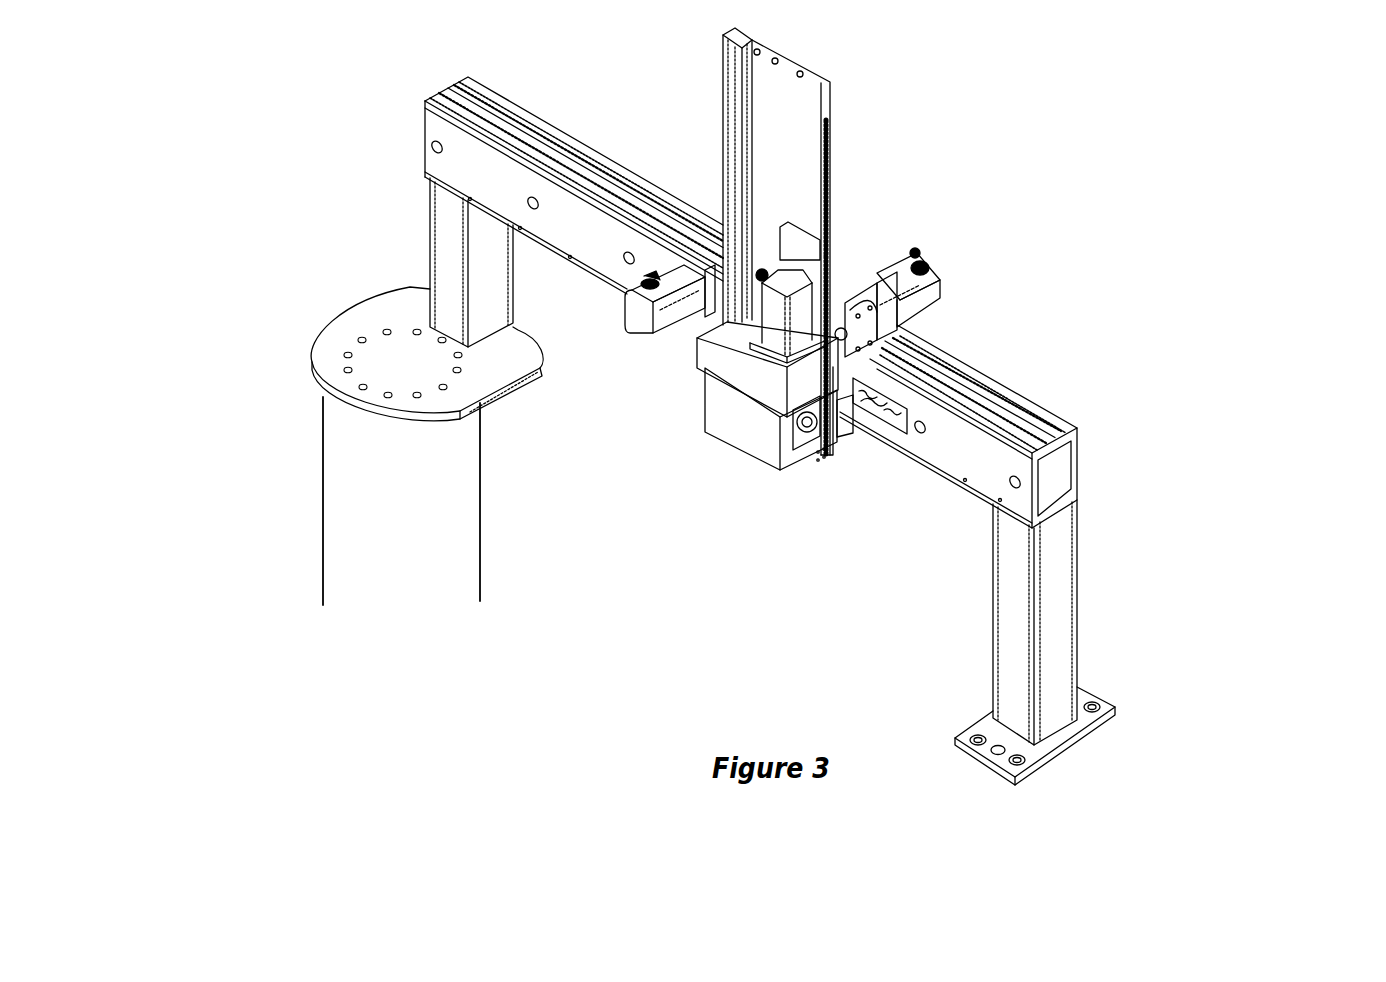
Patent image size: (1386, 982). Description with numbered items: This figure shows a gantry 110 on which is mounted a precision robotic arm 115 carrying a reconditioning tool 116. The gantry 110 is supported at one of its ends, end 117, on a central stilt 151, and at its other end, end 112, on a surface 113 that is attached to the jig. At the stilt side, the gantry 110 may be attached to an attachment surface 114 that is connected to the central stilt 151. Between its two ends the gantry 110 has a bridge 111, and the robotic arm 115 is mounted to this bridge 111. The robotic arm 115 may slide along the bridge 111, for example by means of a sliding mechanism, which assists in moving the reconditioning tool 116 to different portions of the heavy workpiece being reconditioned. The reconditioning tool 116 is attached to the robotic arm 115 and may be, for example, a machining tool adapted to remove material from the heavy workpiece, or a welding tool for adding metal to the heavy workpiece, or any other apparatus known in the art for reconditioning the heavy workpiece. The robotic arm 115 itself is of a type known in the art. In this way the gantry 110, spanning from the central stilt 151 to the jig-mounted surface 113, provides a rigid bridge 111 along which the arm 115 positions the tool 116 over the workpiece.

The gantry 110 is at (735, 438).
The bridge 111 is at (915, 412).
The end 112 is at (1056, 556).
The surface 113 is at (1087, 717).
The attachment surface 114 is at (400, 350).
The precision robotic arm 115 is at (760, 258).
The reconditioning tool 116 is at (755, 463).
The end 117 is at (456, 238).
The central stilt 151 is at (342, 476).